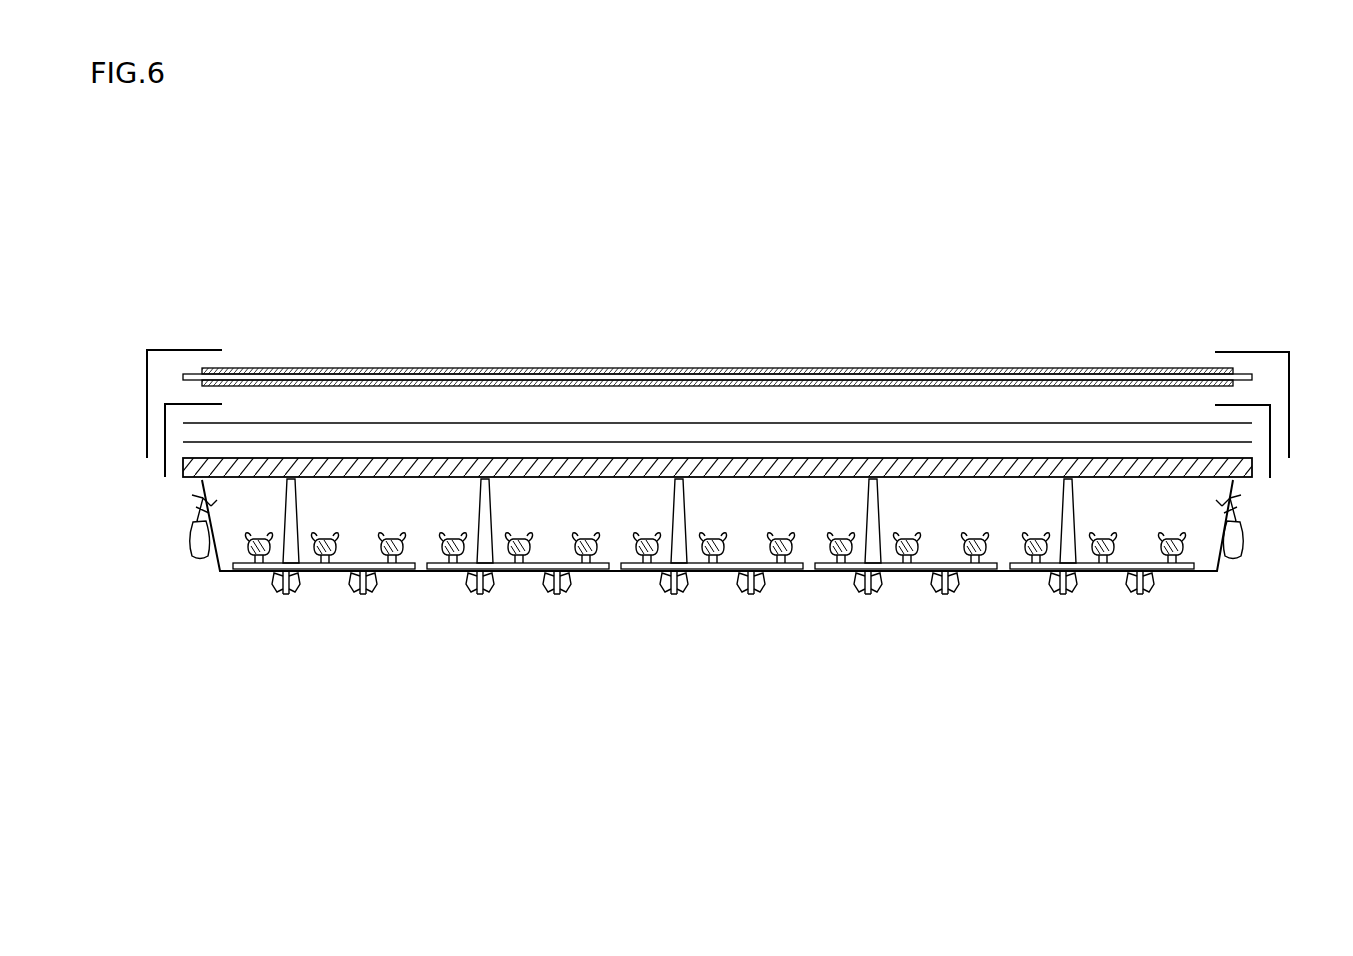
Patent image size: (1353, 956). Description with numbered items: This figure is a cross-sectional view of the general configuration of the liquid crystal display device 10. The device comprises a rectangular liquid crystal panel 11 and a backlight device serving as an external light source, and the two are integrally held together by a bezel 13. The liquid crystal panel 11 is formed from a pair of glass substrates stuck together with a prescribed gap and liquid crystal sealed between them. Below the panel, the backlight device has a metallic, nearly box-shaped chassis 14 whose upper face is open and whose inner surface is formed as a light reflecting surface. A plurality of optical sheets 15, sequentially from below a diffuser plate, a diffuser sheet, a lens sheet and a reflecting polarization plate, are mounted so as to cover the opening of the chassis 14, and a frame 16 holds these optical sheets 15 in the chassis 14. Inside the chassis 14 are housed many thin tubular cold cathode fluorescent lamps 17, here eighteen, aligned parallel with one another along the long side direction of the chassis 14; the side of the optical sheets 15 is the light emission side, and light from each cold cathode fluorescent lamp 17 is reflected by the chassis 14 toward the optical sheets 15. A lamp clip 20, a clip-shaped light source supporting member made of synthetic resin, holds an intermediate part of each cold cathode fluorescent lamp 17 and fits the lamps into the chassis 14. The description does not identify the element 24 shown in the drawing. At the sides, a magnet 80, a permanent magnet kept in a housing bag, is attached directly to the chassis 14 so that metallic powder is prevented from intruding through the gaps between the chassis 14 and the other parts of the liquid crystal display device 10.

The liquid crystal display device 10 is at (582, 302).
The liquid crystal panel 11 is at (450, 368).
The bezel 13 is at (190, 350).
The chassis 14 is at (216, 562).
The optical sheets 15 is at (747, 442).
The frame 16 is at (175, 403).
The cold cathode fluorescent lamp 17 is at (392, 534).
The lamp clip 20 is at (228, 567).
The support pin 24 is at (286, 502).
The magnet 80 is at (192, 536).